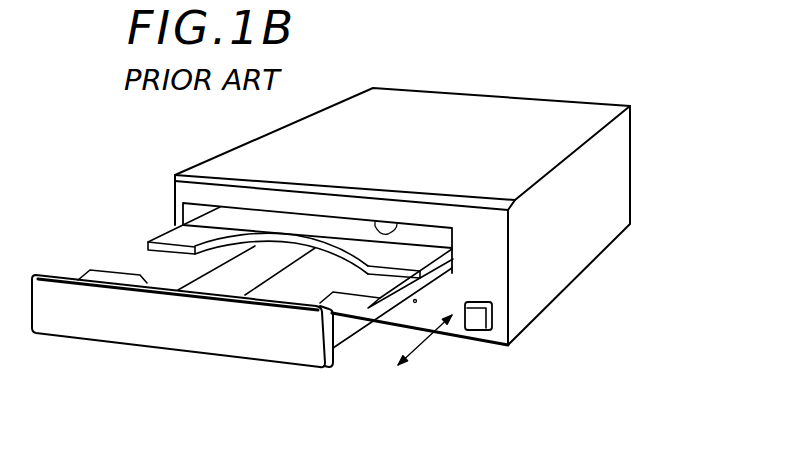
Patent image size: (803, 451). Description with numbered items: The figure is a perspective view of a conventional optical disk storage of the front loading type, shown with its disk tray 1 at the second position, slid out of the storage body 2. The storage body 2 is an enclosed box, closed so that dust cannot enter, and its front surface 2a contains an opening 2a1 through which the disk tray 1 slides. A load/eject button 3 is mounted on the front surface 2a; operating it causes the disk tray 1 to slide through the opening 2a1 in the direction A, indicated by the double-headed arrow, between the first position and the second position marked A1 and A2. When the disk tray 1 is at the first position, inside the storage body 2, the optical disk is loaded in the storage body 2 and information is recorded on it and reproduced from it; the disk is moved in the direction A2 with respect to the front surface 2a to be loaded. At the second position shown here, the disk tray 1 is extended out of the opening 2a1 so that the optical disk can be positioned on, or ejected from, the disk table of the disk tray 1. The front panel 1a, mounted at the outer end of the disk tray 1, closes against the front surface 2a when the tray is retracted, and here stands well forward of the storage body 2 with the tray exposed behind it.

The disk tray 1 is at (157, 270).
The front panel 1a is at (187, 335).
The storage body 2 is at (572, 256).
The front surface 2a is at (500, 336).
The opening 2a1 is at (400, 220).
The eject button 3 is at (474, 325).
The direction A is at (425, 344).
The tray ejected position A1 is at (396, 380).
The direction A2 is at (446, 303).